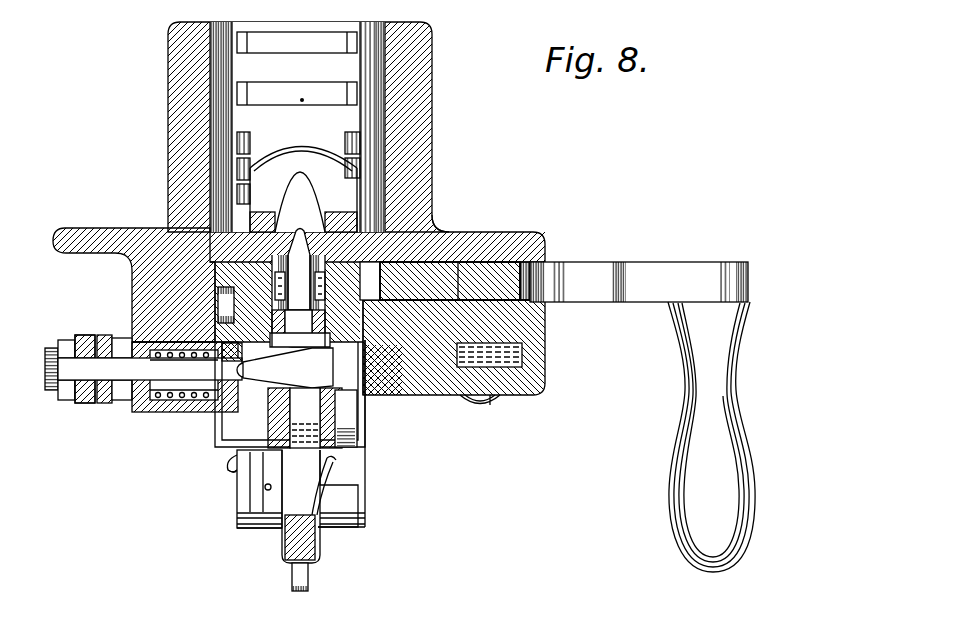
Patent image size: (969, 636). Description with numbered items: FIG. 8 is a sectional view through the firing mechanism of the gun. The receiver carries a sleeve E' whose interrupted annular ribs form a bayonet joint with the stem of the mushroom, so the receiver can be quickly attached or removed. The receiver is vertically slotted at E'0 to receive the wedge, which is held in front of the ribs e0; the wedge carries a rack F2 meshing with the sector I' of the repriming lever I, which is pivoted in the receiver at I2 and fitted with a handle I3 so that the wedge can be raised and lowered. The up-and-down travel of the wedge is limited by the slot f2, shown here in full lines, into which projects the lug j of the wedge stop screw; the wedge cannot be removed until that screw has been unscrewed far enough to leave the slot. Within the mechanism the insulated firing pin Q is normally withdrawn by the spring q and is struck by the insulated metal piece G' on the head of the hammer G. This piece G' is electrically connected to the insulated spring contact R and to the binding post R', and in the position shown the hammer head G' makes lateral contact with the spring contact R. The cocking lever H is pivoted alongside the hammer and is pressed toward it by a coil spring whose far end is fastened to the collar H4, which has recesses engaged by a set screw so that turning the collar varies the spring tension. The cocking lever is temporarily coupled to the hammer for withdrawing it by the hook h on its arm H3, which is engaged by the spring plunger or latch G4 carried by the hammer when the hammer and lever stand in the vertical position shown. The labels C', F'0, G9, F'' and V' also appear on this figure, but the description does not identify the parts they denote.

The sleeve E' is at (320, 127).
The piston C' is at (298, 132).
The insulated firing pin Q is at (337, 233).
The vertical slot E'0 is at (299, 278).
The slot f2 is at (222, 305).
The spring q is at (272, 266).
The lug j is at (220, 303).
The ribs e0 is at (380, 320).
The spring pocket F'0 is at (467, 388).
The sector I' is at (445, 251).
The rack F2 is at (410, 262).
The pivot of repriming lever I2 is at (535, 322).
The repriming lever I is at (639, 265).
The handle I3 is at (690, 445).
The binding post R' is at (88, 351).
The insulated spring contact R is at (154, 397).
The hammer G is at (290, 393).
The insulated metal piece G' is at (257, 406).
The plunger G4 is at (277, 450).
The hook h is at (235, 457).
The lug G9 is at (228, 462).
The collar H4 is at (266, 524).
The cocking lever H is at (305, 485).
The arm of cocking lever H3 is at (348, 432).
The plate F'' is at (304, 535).
The valve stem V' is at (332, 572).